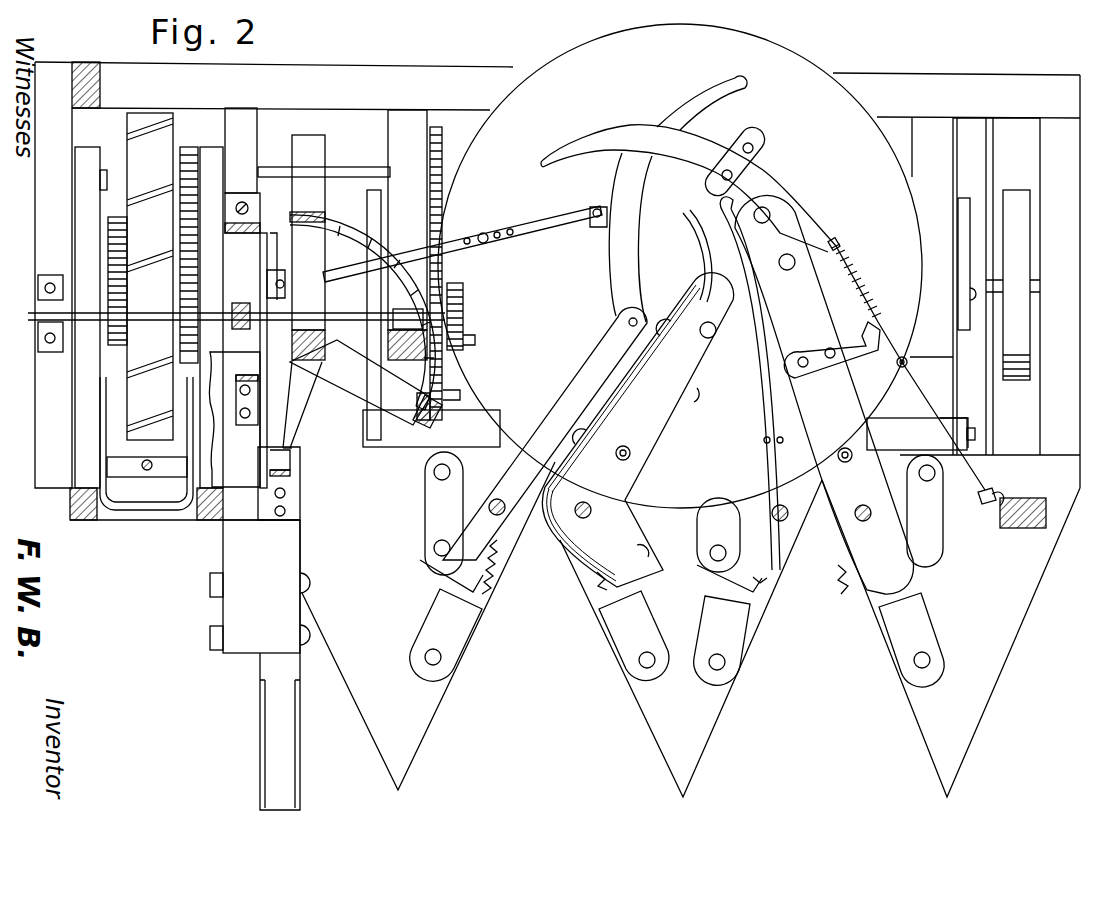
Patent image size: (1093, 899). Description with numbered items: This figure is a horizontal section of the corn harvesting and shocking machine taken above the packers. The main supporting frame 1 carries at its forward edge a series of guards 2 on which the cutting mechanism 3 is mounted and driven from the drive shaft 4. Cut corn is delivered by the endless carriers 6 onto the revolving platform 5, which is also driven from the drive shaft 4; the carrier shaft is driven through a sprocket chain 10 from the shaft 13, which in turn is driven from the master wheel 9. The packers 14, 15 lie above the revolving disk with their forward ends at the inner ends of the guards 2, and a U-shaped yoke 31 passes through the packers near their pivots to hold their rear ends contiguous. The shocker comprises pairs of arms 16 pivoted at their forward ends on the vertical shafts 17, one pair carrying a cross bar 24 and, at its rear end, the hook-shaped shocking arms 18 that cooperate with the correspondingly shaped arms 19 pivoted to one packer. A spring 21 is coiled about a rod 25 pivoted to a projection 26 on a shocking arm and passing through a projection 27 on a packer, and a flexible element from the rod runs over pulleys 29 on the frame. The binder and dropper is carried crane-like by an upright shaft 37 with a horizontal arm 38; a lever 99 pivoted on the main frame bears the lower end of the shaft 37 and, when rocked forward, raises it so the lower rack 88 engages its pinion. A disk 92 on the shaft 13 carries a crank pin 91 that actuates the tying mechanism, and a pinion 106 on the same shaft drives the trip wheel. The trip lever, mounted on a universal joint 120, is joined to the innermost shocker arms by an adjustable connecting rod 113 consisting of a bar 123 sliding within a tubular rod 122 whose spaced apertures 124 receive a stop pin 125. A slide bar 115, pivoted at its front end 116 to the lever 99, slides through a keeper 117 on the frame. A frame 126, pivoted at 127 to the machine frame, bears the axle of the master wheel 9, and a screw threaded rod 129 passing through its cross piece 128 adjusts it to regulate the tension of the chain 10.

The main supporting frame 1 is at (57, 488).
The guards 2 is at (415, 706).
The cutting mechanism 3 is at (485, 582).
The drive shaft 4 is at (440, 262).
The revolving platform 5 is at (680, 266).
The endless carriers 6 is at (768, 312).
The master wheel 9 is at (128, 120).
The sprocket chain 10 is at (458, 394).
The shaft 13 is at (345, 385).
The packer 14 is at (800, 410).
The packer 15 is at (637, 398).
The arms 16 is at (572, 397).
The vertical shafts 17 is at (497, 500).
The shocking arms 18 is at (712, 95).
The shocking arms 19 is at (705, 165).
The spring 21 is at (851, 262).
The cross bar 24 is at (764, 444).
The rod 25 is at (802, 190).
The projection 26 is at (743, 146).
The projection 27 is at (877, 318).
The pulleys 29 is at (983, 506).
The U-shaped yoke 31 is at (630, 453).
The upright shaft 37 is at (303, 400).
The arm 38 is at (313, 160).
The lower rack 88 is at (335, 224).
The crank pin 91 is at (466, 340).
The disk 92 is at (457, 307).
The lever 99 is at (292, 478).
The pinion 106 is at (292, 448).
The adjustable connecting rod 113 is at (462, 242).
The slide bar 115 is at (256, 428).
The front end 116 is at (223, 493).
The keeper 117 is at (276, 230).
The universal joint 120 is at (268, 280).
The tubular rod 122 is at (592, 212).
The bar 123 is at (348, 275).
The spaced apertures 124 is at (498, 234).
The stop pin 125 is at (486, 242).
The frame 126 is at (83, 242).
The pivot 127 is at (100, 175).
The cross piece 128 is at (122, 460).
The screw threaded rod 129 is at (148, 472).